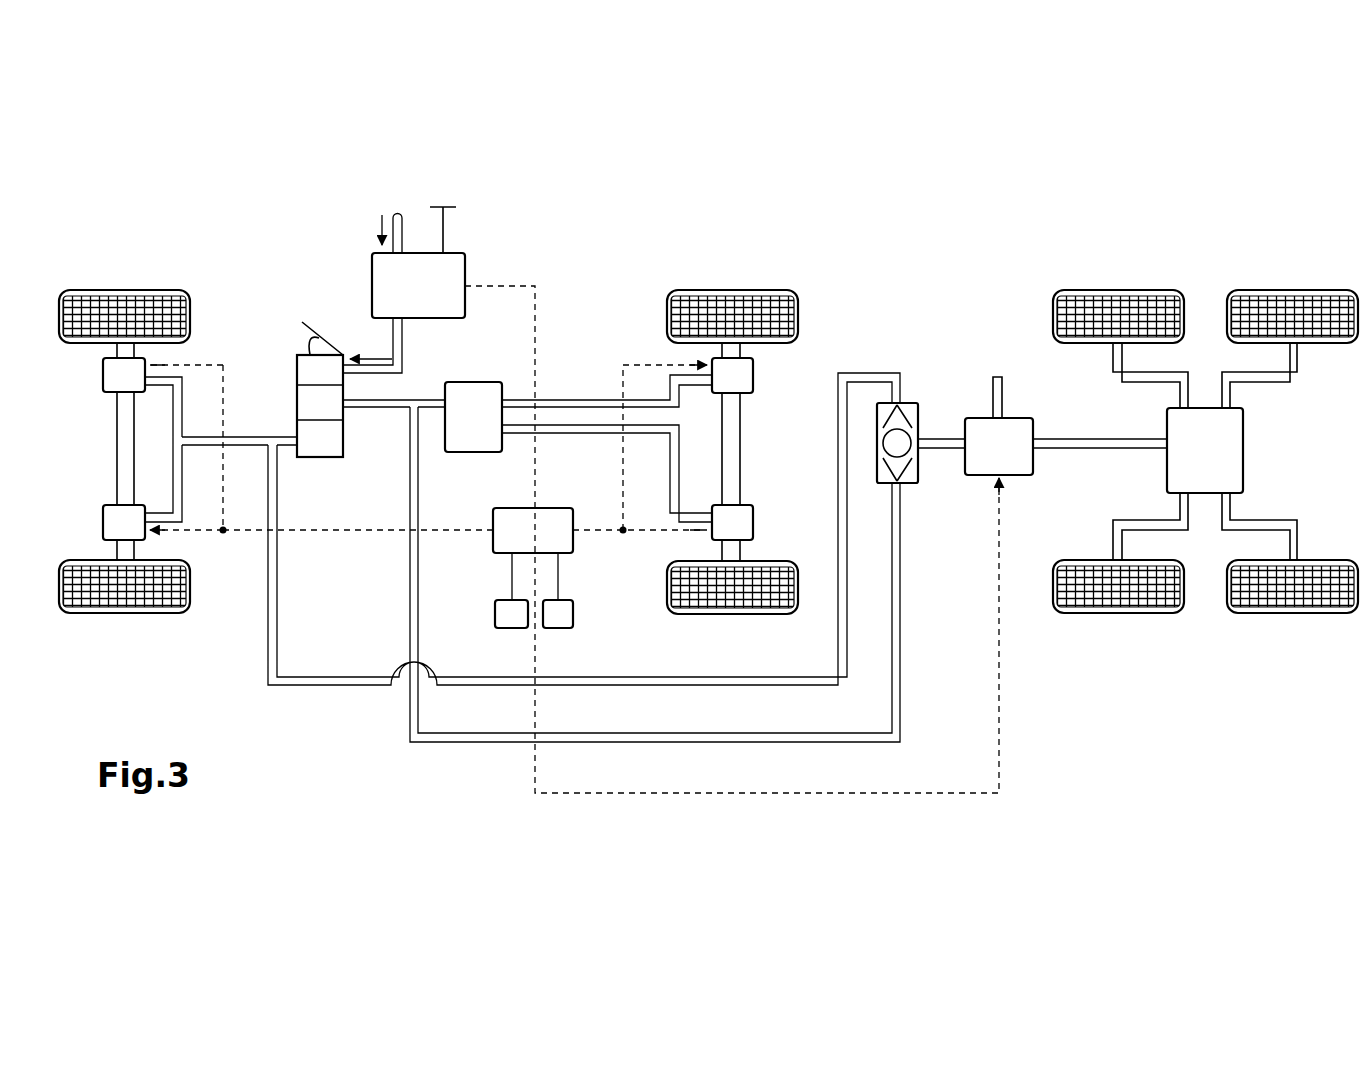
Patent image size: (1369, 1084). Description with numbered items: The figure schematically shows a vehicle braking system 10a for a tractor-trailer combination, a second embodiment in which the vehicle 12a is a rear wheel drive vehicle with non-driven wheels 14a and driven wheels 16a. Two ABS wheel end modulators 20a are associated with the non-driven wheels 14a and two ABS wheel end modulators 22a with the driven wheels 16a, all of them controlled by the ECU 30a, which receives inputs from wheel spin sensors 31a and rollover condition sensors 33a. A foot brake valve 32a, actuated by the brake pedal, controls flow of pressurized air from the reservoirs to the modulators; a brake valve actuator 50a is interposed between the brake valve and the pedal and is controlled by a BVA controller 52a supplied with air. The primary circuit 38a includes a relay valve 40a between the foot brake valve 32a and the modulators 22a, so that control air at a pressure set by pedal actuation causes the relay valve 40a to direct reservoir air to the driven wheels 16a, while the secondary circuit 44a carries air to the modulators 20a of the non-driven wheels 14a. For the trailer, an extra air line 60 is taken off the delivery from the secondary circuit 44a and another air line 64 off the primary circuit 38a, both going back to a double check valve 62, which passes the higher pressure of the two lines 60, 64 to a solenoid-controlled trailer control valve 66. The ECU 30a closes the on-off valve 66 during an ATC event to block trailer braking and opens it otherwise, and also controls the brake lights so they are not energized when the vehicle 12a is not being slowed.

The vehicle braking system 10a is at (343, 725).
The vehicle 12a is at (367, 763).
The non-driven wheels 14a is at (112, 308).
The driven wheels 16a is at (752, 300).
The ABS wheel end modulators 20a is at (115, 522).
The ABS wheel end modulators 22a is at (742, 373).
The ECU 30a is at (563, 518).
The wheel spin sensors 31a is at (565, 618).
The foot brake valve 32a is at (345, 459).
The rollover condition sensors 33a is at (510, 617).
The primary circuit 38a is at (408, 398).
The relay valve 40a is at (468, 437).
The secondary circuit 44a is at (243, 433).
The brake valve actuator 50a is at (297, 365).
The BVA controller 52a is at (462, 253).
The air line 60 is at (344, 675).
The double check valve 62 is at (913, 408).
The air line 64 is at (480, 745).
The trailer control valve 66 is at (1020, 432).